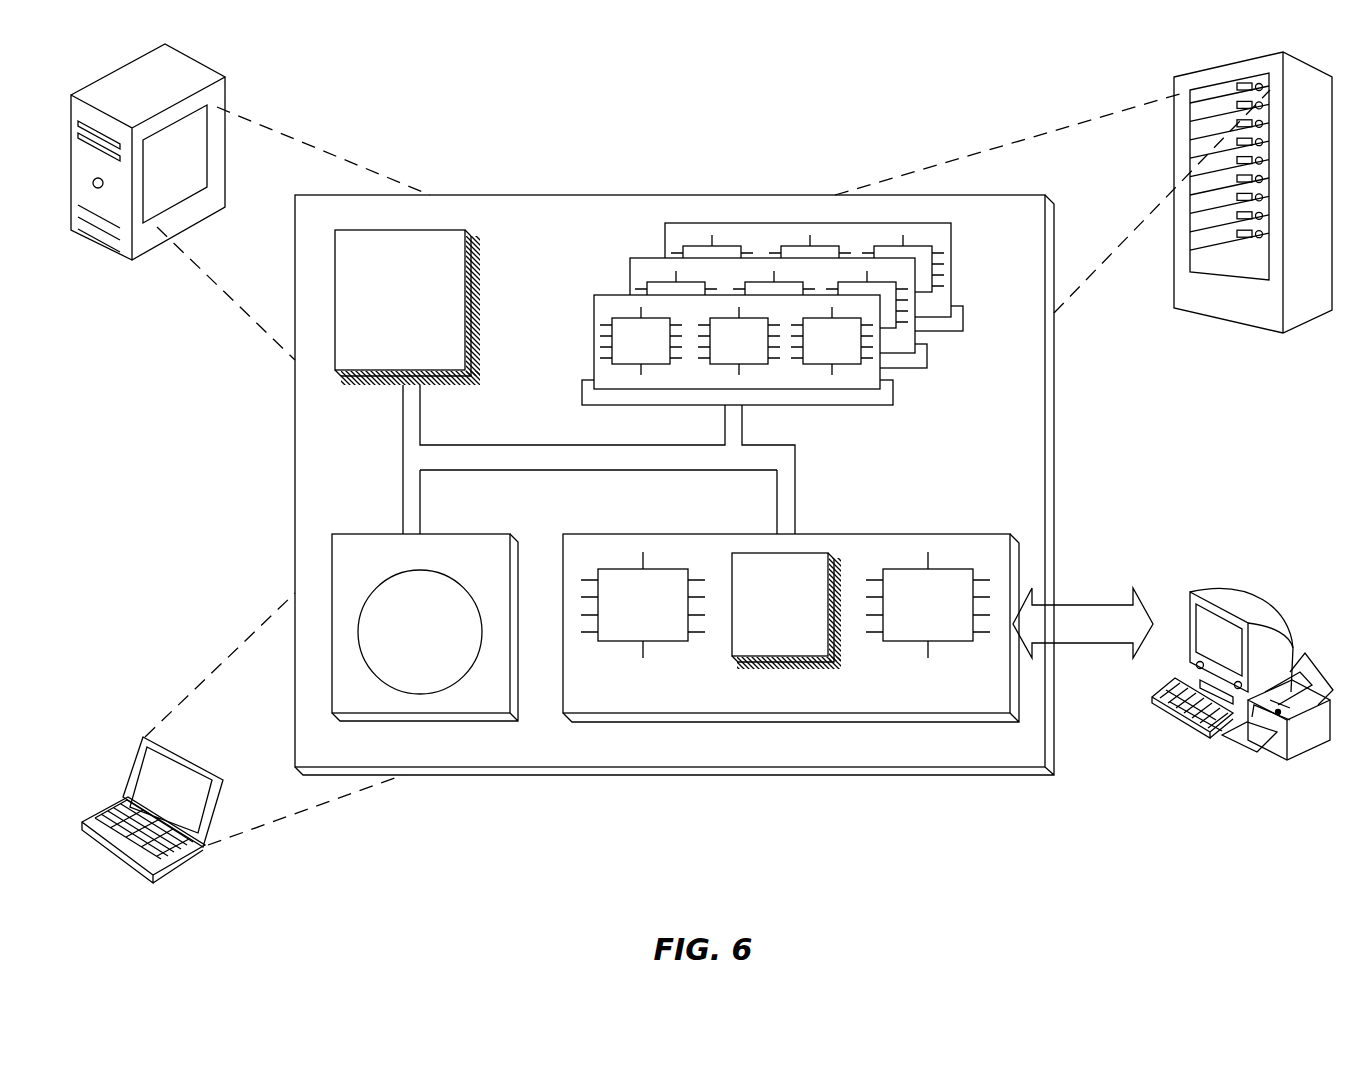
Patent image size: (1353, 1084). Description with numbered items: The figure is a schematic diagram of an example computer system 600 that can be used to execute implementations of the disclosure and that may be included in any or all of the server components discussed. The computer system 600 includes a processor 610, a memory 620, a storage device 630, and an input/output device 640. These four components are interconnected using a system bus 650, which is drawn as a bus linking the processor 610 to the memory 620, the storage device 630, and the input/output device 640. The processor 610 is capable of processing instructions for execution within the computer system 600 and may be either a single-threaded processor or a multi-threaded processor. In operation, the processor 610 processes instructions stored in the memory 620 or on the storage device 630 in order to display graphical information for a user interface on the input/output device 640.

The computer system 600 is at (497, 128).
The processor 610 is at (456, 360).
The memory 620 is at (957, 369).
The storage device 630 is at (501, 705).
The input/output device 640 is at (1183, 602).
The system bus 650 is at (595, 463).